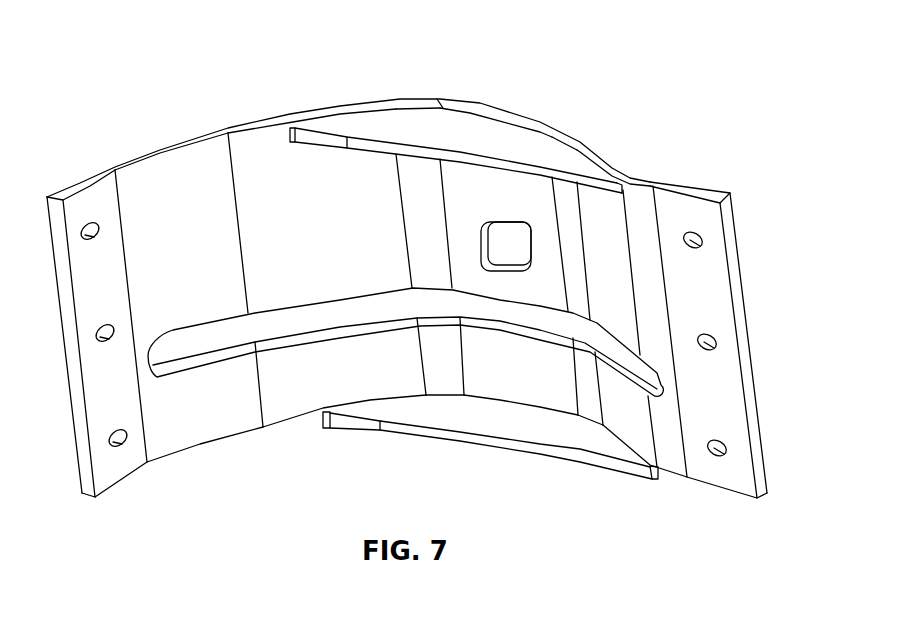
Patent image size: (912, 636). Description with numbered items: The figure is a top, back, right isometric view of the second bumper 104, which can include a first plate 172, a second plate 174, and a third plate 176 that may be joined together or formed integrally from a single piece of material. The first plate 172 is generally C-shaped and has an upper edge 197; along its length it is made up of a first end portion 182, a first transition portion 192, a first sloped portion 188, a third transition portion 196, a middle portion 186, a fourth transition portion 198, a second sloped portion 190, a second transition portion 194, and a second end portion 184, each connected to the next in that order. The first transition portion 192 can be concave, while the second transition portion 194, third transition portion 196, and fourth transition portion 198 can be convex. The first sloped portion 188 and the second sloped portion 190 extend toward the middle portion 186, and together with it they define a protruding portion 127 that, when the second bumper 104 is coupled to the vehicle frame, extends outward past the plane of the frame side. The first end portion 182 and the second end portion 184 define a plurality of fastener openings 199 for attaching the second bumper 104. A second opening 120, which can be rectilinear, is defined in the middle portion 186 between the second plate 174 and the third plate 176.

The second bumper 104 is at (705, 60).
The second opening 120 is at (490, 233).
The protruding portion 127 is at (447, 180).
The first plate 172 is at (718, 296).
The second plate 174 is at (549, 151).
The third plate 176 is at (480, 425).
The first end portion 182 is at (710, 214).
The second end portion 184 is at (80, 203).
The middle portion 186 is at (472, 192).
The first sloped portion 188 is at (627, 418).
The second sloped portion 190 is at (258, 152).
The first transition portion 192 is at (677, 472).
The second transition portion 194 is at (172, 167).
The third transition portion 196 is at (574, 234).
The upper edge 197 is at (615, 175).
The fourth transition portion 198 is at (412, 190).
The fastener openings 199 is at (712, 240).